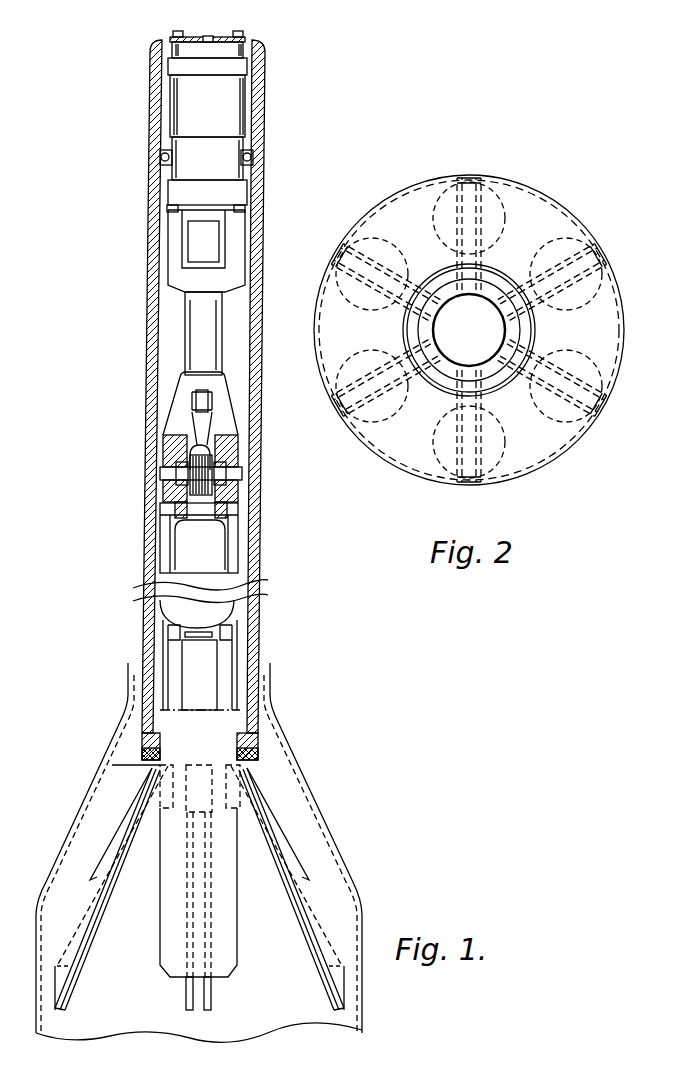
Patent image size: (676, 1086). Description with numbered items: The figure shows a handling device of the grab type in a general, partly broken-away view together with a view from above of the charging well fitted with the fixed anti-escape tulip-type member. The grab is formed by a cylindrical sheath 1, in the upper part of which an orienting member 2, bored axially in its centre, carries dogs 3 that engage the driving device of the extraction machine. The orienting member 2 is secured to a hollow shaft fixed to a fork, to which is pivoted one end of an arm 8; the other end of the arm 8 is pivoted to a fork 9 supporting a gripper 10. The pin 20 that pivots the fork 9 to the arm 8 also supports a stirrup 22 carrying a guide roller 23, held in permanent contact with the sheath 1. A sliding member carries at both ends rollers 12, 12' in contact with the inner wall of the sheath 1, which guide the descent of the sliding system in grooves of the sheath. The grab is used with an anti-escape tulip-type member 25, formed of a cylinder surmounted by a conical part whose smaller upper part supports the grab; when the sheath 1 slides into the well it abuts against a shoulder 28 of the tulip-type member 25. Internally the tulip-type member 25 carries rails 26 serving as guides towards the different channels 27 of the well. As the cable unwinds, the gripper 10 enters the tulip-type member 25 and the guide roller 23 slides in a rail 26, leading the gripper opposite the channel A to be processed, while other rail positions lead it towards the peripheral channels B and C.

In FIG. 1, the cylindrical sheath 1 is at (264, 108).
In FIG. 1, the orienting member 2 is at (193, 41).
In FIG. 1, the dogs 3 is at (240, 31).
In FIG. 1, the arm 8 is at (211, 368).
In FIG. 1, the fork 9 is at (163, 527).
In FIG. 1, the gripper 10 is at (186, 553).
In FIG. 1, the roller 12 is at (269, 167).
In FIG. 1, the roller 12' is at (139, 159).
In FIG. 1, the pin 20 is at (170, 477).
In FIG. 1, the stirrup 22 is at (192, 446).
In FIG. 1, the guide roller 23 is at (195, 401).
In FIG. 1, the tulip-type member 25 is at (68, 837).
In FIG. 2, the tulip-type member 25 is at (545, 450).
In FIG. 1, the rails 26 is at (312, 920).
In FIG. 2, the rails 26 is at (462, 483).
In FIG. 2, the channels 27 is at (368, 418).
In FIG. 1, the shoulder 28 is at (112, 765).
In FIG. 2, the channel A is at (494, 196).
In FIG. 2, the channel B is at (583, 251).
In FIG. 2, the channel C is at (605, 388).